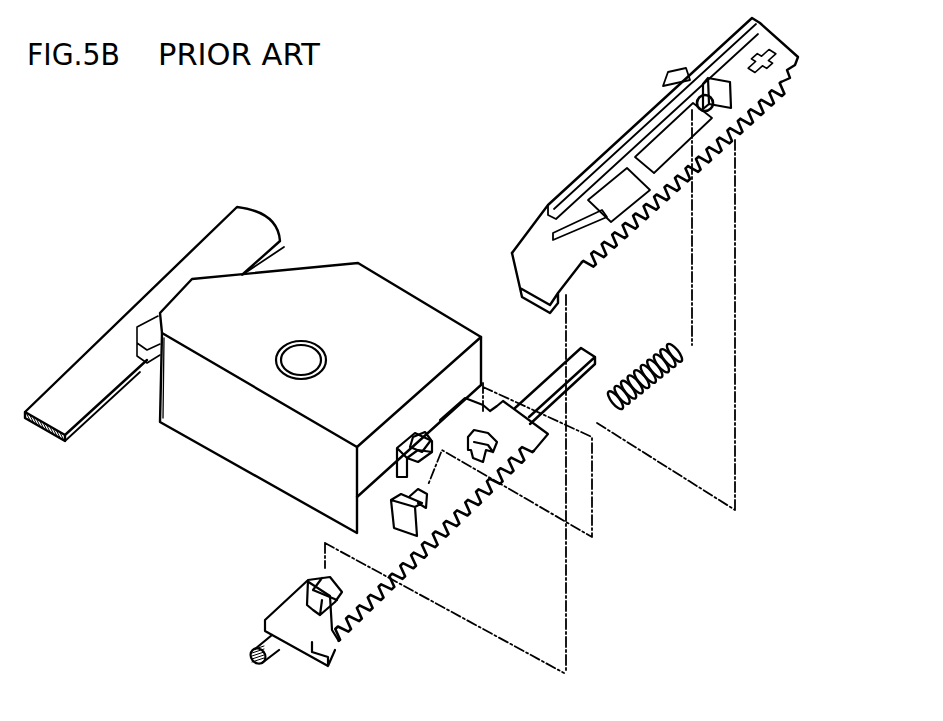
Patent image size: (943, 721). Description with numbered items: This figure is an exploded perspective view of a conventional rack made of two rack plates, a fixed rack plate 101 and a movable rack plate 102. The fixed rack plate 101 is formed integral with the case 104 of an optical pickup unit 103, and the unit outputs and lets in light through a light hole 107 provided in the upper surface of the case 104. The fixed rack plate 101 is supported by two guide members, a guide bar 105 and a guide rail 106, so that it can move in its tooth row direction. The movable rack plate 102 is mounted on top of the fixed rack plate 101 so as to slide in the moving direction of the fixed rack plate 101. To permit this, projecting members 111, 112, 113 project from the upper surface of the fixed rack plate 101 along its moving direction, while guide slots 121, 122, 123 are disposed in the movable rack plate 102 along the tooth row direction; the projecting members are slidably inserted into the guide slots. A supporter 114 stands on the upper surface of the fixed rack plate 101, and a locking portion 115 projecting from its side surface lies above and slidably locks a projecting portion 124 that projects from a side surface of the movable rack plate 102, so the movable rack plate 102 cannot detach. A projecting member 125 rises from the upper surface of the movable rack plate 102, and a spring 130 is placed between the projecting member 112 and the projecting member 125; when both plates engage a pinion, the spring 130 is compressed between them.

The fixed rack plate 101 is at (298, 623).
The movable rack plate 102 is at (540, 265).
The optical pickup unit 103 is at (318, 262).
The case 104 is at (235, 442).
The guide bar 105 is at (550, 390).
The guide rail 106 is at (223, 257).
The light hole 107 is at (297, 358).
The projecting member 111 is at (313, 614).
The projecting member 112 is at (401, 522).
The projecting member 113 is at (482, 437).
The supporter 114 is at (393, 460).
The locking portion 115 is at (417, 442).
The guide slot 121 is at (606, 216).
The guide slot 122 is at (707, 157).
The guide slot 123 is at (775, 93).
The projecting portion 124 is at (676, 76).
The projecting member 125 is at (725, 62).
The spring 130 is at (680, 370).